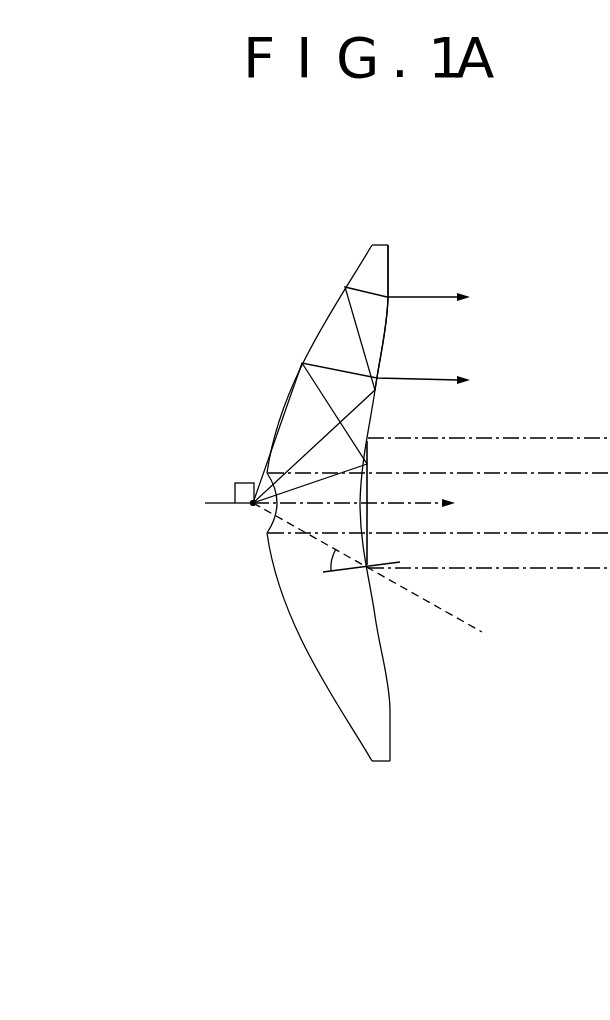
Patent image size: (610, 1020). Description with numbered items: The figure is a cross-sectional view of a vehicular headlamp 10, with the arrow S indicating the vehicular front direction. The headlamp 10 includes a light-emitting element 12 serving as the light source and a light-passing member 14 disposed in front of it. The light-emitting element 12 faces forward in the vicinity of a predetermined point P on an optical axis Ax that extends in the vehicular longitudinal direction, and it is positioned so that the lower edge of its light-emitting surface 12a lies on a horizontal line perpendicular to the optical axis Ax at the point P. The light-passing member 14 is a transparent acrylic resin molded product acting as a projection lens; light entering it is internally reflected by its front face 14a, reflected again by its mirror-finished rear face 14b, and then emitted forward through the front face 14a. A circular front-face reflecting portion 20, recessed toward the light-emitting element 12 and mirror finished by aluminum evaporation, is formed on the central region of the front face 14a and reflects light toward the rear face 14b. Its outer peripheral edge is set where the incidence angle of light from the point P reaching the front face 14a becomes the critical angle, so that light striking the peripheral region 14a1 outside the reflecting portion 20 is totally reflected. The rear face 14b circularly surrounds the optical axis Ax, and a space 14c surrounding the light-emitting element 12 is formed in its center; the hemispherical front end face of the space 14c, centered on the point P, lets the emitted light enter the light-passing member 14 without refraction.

The vehicular headlamp 10 is at (387, 889).
The light-emitting element 12 is at (237, 483).
The light-emitting surface 12a is at (257, 485).
The light-passing member 14 is at (344, 516).
The front face 14a is at (391, 724).
The peripheral region 14a1 is at (385, 334).
The rear face 14b is at (340, 707).
The space 14c is at (268, 520).
The front-face reflecting portion 20 is at (370, 518).
The predetermined point P is at (256, 508).
The arrow indicating vehicular front direction S is at (418, 506).
The optical axis Ax is at (313, 508).